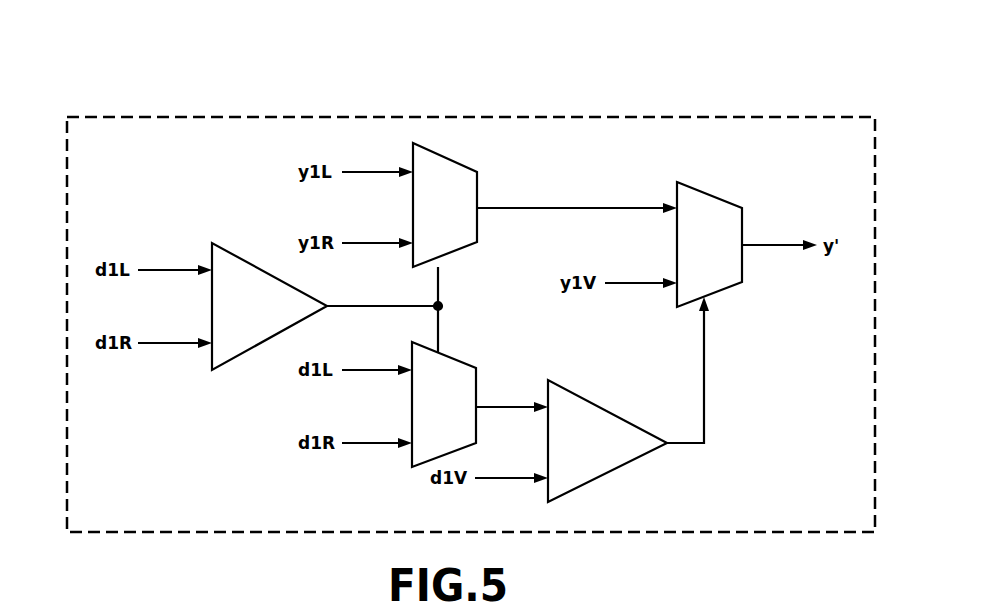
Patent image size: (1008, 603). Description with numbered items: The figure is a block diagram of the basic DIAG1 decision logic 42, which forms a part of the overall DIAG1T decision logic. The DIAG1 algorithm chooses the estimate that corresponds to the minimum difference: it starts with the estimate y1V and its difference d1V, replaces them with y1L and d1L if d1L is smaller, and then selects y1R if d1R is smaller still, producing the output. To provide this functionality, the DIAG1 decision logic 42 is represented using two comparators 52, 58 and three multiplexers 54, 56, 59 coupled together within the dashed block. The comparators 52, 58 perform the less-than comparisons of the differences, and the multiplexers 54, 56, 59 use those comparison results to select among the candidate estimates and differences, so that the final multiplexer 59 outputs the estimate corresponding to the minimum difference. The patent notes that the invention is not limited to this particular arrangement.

The DIAG1 decision logic 42 is at (684, 110).
The comparator 52 is at (220, 252).
The multiplexer 54 is at (458, 252).
The multiplexer 56 is at (445, 357).
The comparator 58 is at (580, 392).
The multiplexer 59 is at (700, 198).